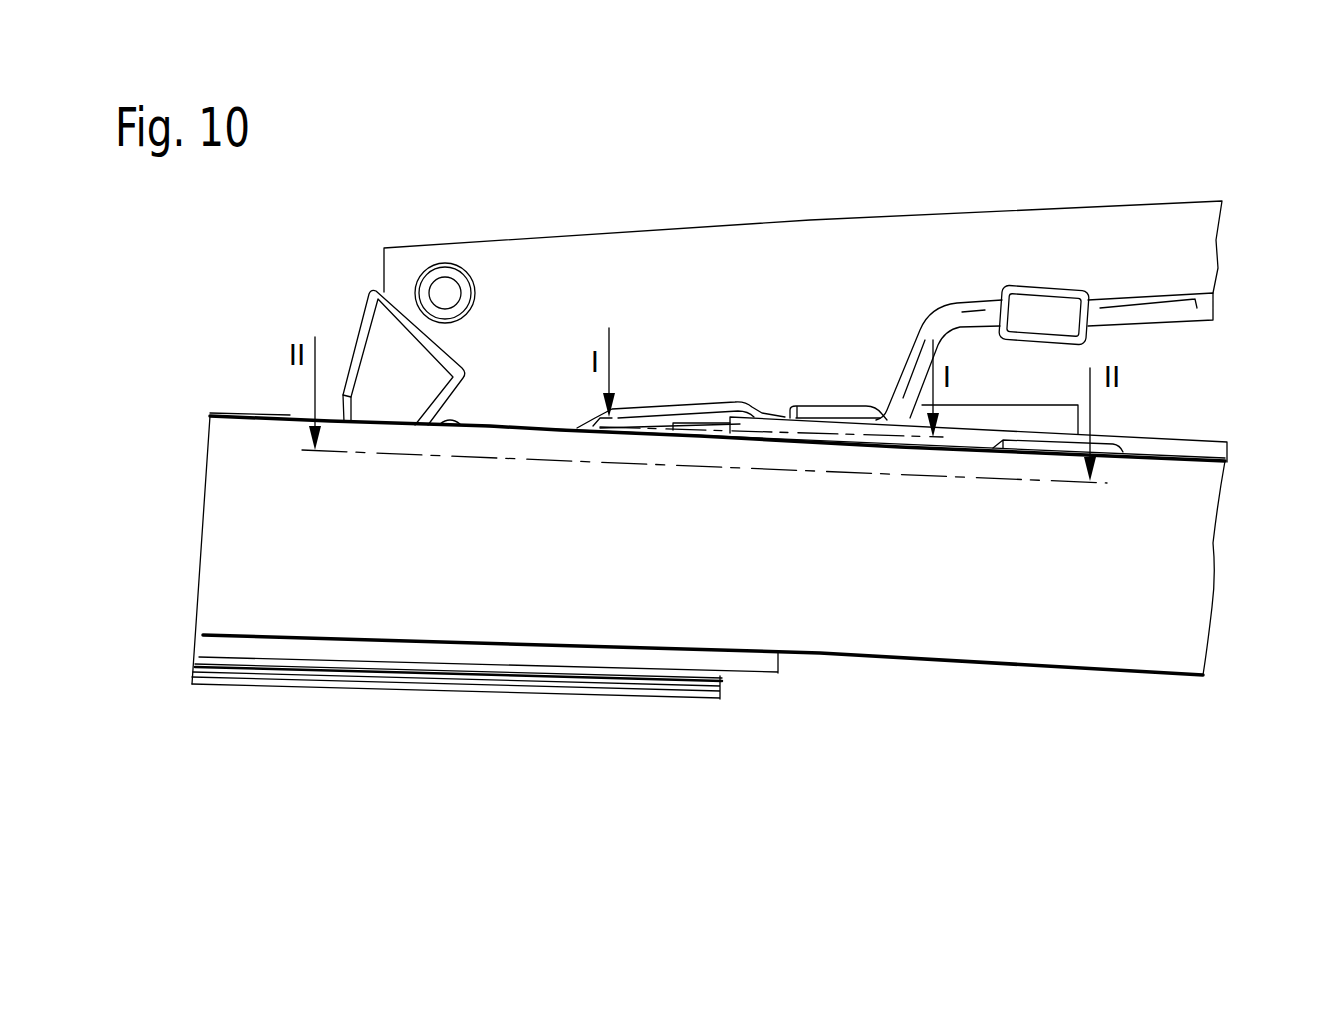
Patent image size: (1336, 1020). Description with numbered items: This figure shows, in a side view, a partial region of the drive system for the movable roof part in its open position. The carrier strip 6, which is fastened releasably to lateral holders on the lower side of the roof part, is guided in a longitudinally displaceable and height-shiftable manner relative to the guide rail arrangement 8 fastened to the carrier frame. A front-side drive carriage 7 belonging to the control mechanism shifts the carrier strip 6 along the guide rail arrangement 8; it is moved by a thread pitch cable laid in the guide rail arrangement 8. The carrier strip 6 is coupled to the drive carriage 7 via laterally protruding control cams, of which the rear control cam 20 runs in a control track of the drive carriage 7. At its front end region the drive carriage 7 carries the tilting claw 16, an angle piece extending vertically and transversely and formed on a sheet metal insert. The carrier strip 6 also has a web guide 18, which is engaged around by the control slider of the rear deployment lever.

The carrier strip 6 is at (1138, 235).
The drive carriage 7 is at (1173, 452).
The guide rail arrangement 8 is at (959, 630).
The tilting claw 16 is at (698, 430).
The web guide 18 is at (1208, 313).
The rear control cam 20 is at (1038, 322).